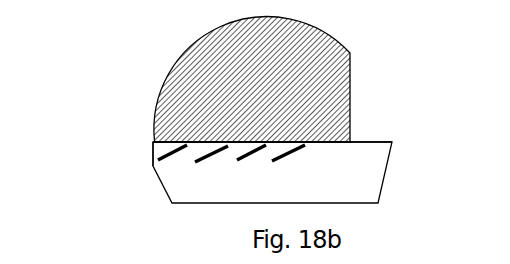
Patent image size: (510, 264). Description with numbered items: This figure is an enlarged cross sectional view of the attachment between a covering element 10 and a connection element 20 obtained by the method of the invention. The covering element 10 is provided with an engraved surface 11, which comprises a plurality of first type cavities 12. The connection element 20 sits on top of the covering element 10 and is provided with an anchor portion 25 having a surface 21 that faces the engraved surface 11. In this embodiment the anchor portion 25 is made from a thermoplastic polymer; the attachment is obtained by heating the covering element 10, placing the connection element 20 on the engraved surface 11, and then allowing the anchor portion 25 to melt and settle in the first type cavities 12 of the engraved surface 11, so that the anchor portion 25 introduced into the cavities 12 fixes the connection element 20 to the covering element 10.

The connection element 20 is at (310, 98).
The surface 21 is at (330, 143).
The covering element 10 is at (345, 182).
The engraved surface 11 is at (392, 142).
The anchor portion 25 is at (180, 152).
The first type cavity 12 is at (155, 162).